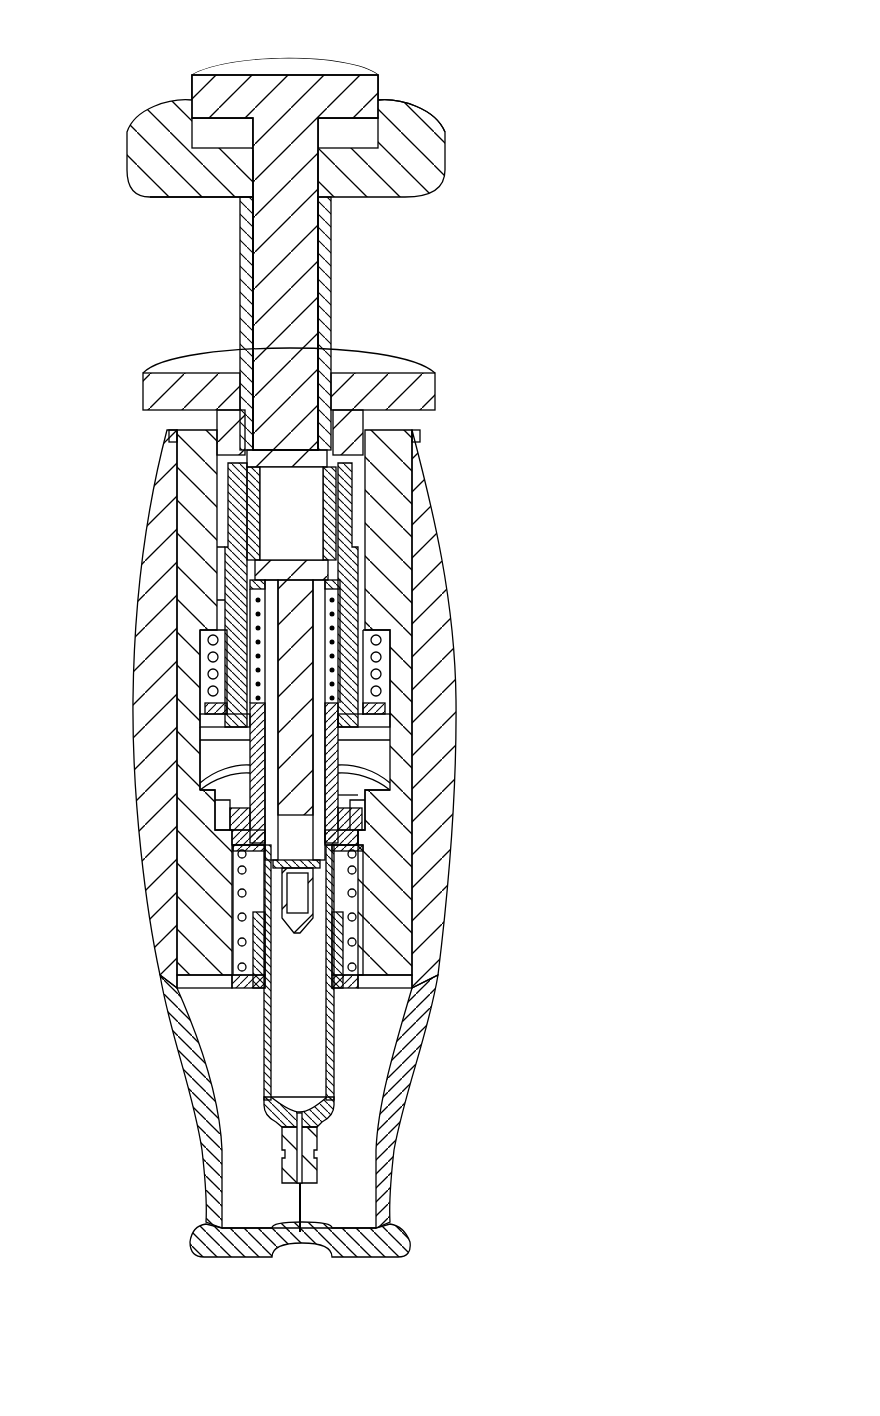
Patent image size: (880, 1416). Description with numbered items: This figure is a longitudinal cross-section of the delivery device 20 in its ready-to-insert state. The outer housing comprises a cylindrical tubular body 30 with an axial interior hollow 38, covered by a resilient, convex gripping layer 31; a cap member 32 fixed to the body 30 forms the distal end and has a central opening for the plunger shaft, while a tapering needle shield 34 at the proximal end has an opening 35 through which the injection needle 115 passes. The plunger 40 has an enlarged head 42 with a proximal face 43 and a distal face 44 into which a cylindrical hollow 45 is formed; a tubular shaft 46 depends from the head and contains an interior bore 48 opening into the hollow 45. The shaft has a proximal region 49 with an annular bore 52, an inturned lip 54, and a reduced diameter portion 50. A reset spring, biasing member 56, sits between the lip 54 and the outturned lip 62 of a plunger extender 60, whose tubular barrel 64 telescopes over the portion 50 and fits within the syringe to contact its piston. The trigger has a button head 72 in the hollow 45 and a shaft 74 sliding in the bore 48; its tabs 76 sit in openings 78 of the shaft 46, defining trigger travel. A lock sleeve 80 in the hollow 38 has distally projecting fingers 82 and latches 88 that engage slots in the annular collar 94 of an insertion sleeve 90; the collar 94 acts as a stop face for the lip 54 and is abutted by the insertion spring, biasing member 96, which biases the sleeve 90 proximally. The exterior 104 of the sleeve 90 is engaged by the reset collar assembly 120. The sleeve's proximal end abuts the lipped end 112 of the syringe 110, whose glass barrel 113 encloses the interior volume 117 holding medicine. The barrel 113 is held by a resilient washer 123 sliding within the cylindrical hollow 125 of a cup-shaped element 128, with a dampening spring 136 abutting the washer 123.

The delivery device 20 is at (538, 563).
The cylindrical tubular body 30 is at (400, 748).
The resilient gripping layer 31 is at (155, 872).
The cap member 32 is at (410, 388).
The needle shield 34 is at (395, 1107).
The opening 35 is at (317, 1250).
The interior hollow 38 is at (225, 748).
The plunger 40 is at (313, 229).
The head 42 is at (405, 162).
The proximal face 43 is at (198, 200).
The distal face 44 is at (393, 97).
The cylindrical hollow 45 is at (372, 132).
The shaft 46 is at (248, 317).
The interior bore 48 is at (297, 523).
The proximal region 49 is at (367, 622).
The reduced diameter portion 50 is at (345, 795).
The annular bore 52 is at (335, 657).
The inturned lip 54 is at (197, 688).
The biasing member 56 is at (380, 694).
The plunger extender 60 is at (340, 767).
The outturned lip 62 is at (358, 580).
The tubular barrel 64 is at (232, 802).
The head 72 is at (343, 92).
The shaft 74 is at (287, 337).
The tabs 76 is at (227, 455).
The openings 78 is at (327, 463).
The lock sleeve 80 is at (212, 593).
The fingers 82 is at (233, 513).
The latches 88 is at (373, 706).
The insertion sleeve 90 is at (364, 822).
The annular collar 94 is at (195, 712).
The biasing member 96 is at (205, 667).
The exterior 104 is at (200, 785).
The syringe 110 is at (345, 1050).
The lipped end 112 is at (242, 830).
The glass barrel 113 is at (264, 1060).
The injection needle 115 is at (303, 1205).
The barrel interior volume 117 is at (288, 1080).
The reset collar assembly 120 is at (383, 840).
The resilient washer 123 is at (368, 870).
The cylindrical hollow 125 is at (367, 898).
The cup-shaped element 128 is at (235, 930).
The dampening spring 136 is at (373, 953).